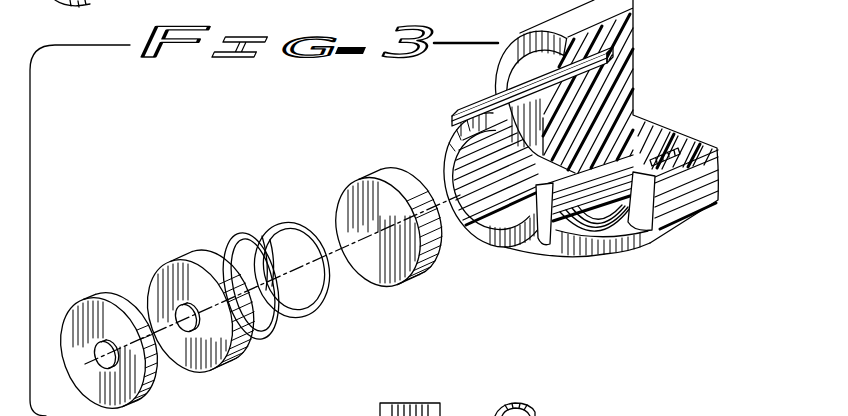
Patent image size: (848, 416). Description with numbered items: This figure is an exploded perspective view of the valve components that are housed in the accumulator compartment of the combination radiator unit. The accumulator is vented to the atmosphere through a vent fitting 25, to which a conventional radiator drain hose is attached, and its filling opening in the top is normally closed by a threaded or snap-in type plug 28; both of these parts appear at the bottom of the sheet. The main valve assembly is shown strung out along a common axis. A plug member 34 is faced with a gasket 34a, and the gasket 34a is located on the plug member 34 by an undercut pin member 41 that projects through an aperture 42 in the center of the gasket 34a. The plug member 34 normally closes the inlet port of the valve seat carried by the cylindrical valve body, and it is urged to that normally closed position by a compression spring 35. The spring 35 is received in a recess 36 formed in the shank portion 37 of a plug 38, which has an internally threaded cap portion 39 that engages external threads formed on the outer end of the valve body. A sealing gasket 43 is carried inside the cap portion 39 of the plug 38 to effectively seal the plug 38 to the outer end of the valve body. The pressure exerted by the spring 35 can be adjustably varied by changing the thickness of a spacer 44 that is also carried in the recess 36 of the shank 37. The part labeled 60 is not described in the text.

The vent fitting 25 is at (508, 405).
The plug 28 is at (445, 393).
The plug member 34 is at (240, 353).
The gasket 34a is at (73, 322).
The compression spring 35 is at (316, 306).
The recess 36 is at (484, 222).
The shank portion 37 is at (546, 246).
The plug 38 is at (633, 108).
The cap portion 39 is at (662, 228).
The undercut pin member 41 is at (193, 330).
The aperture 42 is at (100, 372).
The sealing gasket 43 is at (614, 50).
The spacer 44 is at (348, 215).
The knob 60 is at (96, 5).